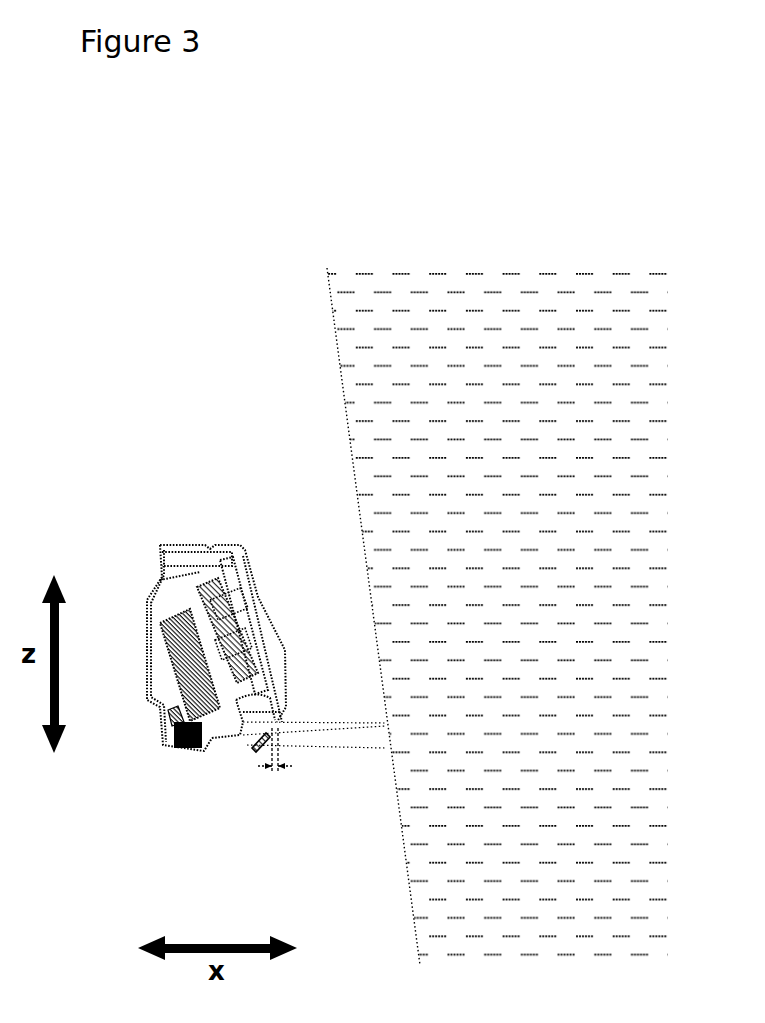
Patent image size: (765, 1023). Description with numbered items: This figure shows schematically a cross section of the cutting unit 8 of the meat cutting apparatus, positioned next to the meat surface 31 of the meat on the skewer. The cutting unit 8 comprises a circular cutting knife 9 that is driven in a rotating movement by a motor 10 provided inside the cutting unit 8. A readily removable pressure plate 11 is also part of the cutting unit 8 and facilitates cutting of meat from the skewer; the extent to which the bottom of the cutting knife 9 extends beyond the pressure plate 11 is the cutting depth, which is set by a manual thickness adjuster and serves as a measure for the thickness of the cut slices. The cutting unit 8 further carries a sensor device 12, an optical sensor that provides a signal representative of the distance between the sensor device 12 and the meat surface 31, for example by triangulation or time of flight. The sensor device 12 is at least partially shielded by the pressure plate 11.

The cutting unit 8 is at (188, 495).
The circular cutting knife 9 is at (234, 635).
The motor 10 is at (215, 648).
The pressure plate 11 is at (263, 742).
The sensor device 12 is at (183, 747).
The meat surface 31 is at (343, 392).